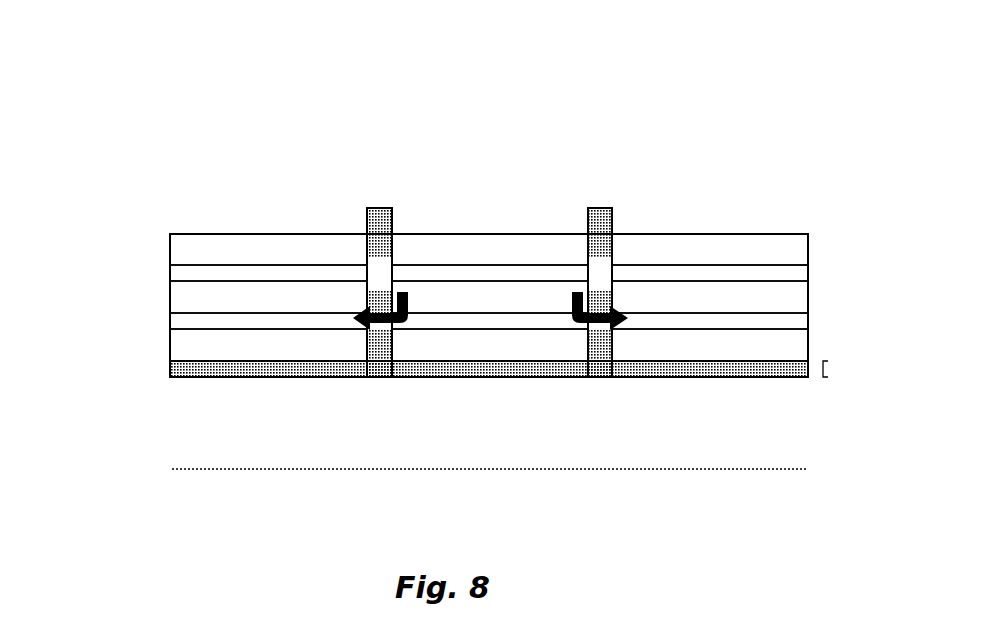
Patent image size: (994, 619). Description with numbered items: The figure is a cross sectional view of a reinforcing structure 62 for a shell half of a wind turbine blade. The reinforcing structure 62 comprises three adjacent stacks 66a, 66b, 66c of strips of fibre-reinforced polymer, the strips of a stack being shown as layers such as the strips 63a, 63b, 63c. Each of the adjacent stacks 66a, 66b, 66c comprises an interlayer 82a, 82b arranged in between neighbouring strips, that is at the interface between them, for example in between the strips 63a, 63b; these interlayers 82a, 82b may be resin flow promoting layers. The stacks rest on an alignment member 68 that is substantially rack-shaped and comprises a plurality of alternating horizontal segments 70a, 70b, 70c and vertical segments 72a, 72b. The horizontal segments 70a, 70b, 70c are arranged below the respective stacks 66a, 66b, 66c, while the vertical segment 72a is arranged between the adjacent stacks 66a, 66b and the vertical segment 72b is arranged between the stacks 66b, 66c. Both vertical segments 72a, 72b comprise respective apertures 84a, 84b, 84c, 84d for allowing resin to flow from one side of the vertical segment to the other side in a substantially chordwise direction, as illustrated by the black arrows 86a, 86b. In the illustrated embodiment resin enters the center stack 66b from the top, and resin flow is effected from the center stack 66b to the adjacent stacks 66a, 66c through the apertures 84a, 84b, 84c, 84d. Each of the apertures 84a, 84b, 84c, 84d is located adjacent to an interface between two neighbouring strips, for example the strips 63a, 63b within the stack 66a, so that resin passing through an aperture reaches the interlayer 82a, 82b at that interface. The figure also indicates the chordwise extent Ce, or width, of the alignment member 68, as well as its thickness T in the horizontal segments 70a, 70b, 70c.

The reinforcing structure 62 is at (138, 113).
The strip 63a is at (182, 344).
The strip 63b is at (182, 296).
The strip 63c is at (182, 248).
The interlayer 82a is at (182, 320).
The interlayer 82b is at (182, 273).
The stack 66a is at (243, 202).
The center stack 66b is at (478, 207).
The stack 66c is at (712, 207).
The alignment member 68 is at (190, 372).
The horizontal segment 70a is at (248, 372).
The horizontal segment 70b is at (488, 372).
The horizontal segment 70c is at (702, 372).
The vertical segment 72a is at (381, 215).
The vertical segment 72b is at (600, 218).
The aperture 84a is at (377, 272).
The aperture 84b is at (382, 330).
The aperture 84c is at (603, 275).
The aperture 84d is at (602, 330).
The arrow 86a is at (400, 288).
The arrow 86b is at (572, 292).
The thickness T is at (830, 370).
The chordwise extent Ce is at (489, 485).